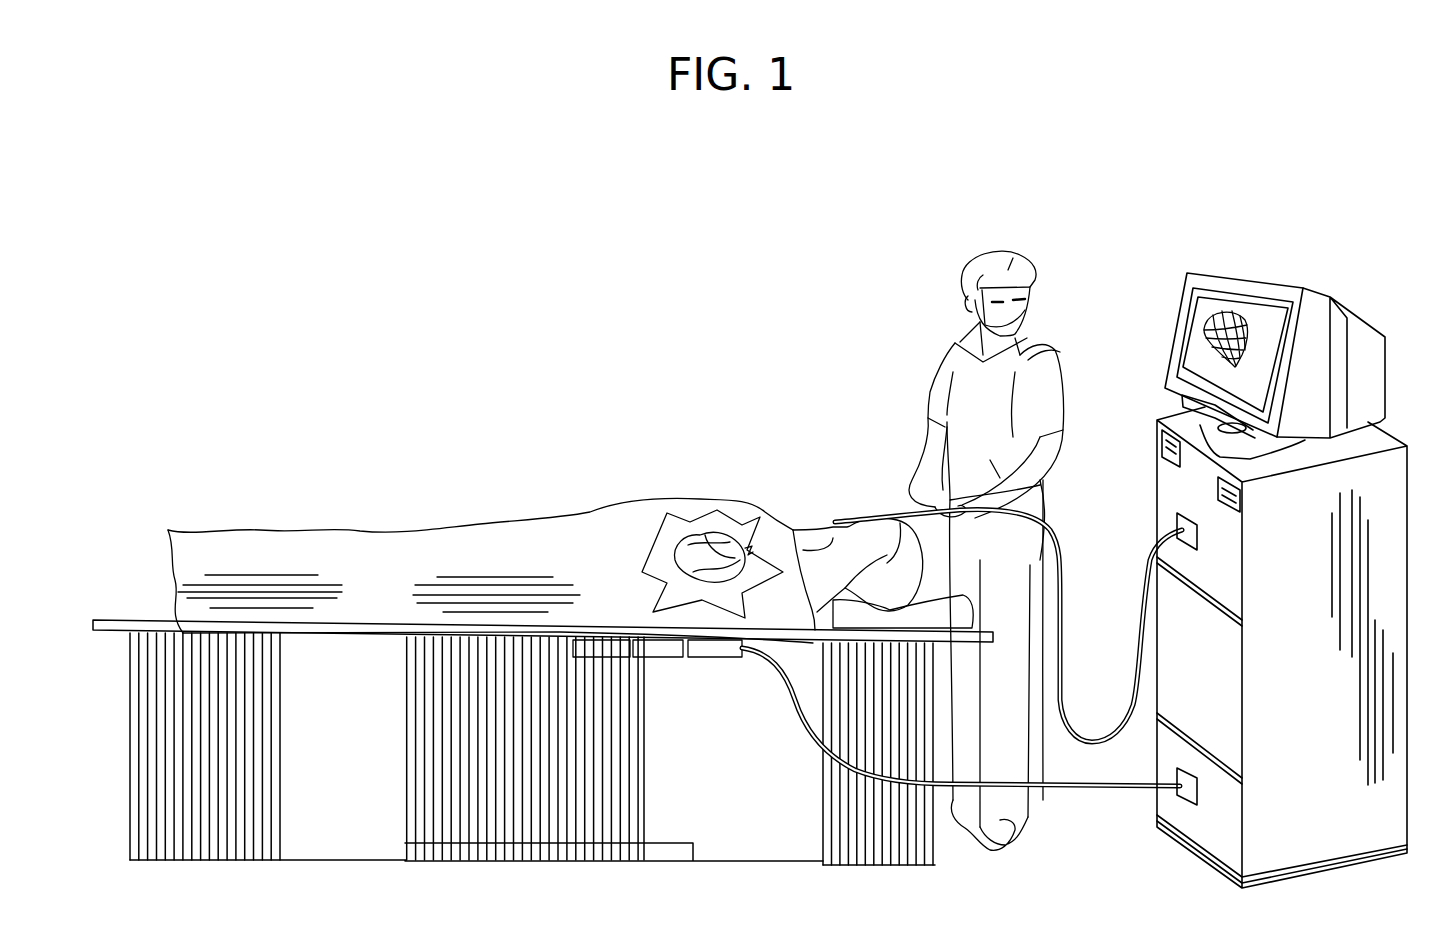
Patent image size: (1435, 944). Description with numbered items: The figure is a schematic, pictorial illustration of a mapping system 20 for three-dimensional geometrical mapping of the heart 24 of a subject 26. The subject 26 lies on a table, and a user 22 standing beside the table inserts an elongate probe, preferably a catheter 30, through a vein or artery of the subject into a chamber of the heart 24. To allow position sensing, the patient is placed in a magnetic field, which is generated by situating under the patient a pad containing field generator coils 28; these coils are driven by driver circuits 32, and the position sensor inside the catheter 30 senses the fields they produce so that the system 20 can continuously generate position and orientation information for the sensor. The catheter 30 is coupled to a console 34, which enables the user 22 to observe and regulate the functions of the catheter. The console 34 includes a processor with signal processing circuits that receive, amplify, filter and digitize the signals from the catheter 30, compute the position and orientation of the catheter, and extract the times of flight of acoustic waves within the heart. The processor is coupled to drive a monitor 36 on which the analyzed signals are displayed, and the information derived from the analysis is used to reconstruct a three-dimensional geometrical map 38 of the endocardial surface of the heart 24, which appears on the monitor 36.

The mapping system 20 is at (1319, 136).
The user 22 is at (958, 393).
The heart 24 is at (720, 532).
The subject 26 is at (887, 620).
The field generator coils 28 is at (725, 657).
The catheter 30 is at (683, 565).
The driver circuits 32 is at (1225, 807).
The console 34 is at (1222, 557).
The monitor 36 is at (1252, 283).
The three-dimensional geometrical map 38 is at (1205, 332).